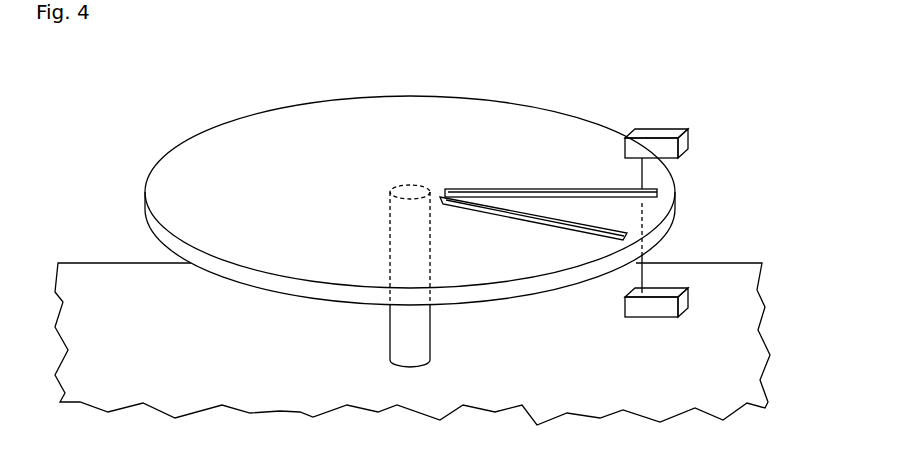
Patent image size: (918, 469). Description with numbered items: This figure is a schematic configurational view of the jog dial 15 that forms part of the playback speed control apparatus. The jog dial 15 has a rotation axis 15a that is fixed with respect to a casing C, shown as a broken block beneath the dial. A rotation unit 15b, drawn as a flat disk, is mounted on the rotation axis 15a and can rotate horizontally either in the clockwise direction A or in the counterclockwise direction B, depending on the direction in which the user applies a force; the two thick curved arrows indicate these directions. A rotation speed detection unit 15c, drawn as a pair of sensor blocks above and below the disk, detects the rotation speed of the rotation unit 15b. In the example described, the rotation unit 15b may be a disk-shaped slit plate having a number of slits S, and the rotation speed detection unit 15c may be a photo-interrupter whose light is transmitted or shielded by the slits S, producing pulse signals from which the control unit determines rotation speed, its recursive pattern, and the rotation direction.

The jog dial 15 is at (722, 179).
The rotation axis 15a is at (390, 340).
The rotation unit 15b is at (320, 112).
The rotation speed detection unit 15c is at (658, 158).
The slits S is at (587, 189).
The clockwise direction A is at (132, 297).
The counterclockwise direction B is at (160, 118).
The casing C is at (696, 409).